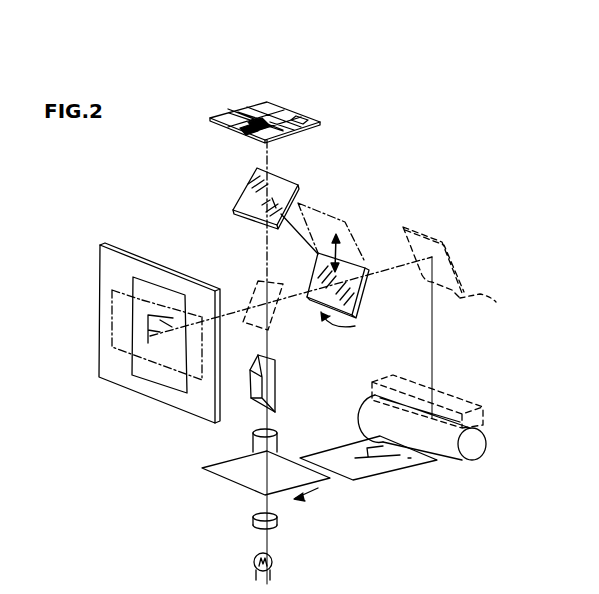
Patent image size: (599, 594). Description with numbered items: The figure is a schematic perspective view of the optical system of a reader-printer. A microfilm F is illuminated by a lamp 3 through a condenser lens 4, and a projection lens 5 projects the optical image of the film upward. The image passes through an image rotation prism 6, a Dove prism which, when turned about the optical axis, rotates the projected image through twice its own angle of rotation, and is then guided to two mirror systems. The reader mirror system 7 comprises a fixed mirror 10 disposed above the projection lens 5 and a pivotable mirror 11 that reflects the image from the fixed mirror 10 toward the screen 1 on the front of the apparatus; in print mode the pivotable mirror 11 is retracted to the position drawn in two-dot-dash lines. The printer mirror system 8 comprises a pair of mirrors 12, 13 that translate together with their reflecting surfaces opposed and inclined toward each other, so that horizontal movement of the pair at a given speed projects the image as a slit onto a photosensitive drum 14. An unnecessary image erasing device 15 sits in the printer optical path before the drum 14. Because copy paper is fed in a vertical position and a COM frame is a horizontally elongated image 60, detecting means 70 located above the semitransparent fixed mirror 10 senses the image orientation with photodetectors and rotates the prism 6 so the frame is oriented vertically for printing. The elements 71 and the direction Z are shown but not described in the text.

The screen 1 is at (107, 372).
The lamp 3 is at (273, 556).
The condenser lens 4 is at (278, 520).
The projection lens 5 is at (253, 438).
The image rotation prism 6 is at (277, 385).
The reader mirror system 7 is at (308, 195).
The printer mirror system 8 is at (460, 250).
The fixed mirror 10 is at (243, 197).
The pivotable mirror 11 is at (348, 300).
The mirror 12 is at (280, 317).
The mirror 13 is at (490, 309).
The photosensitive drum 14 is at (453, 448).
The unnecessary image erasing device 15 is at (443, 392).
The horizontally elongated image 60 is at (112, 292).
The detecting means 70 is at (243, 86).
The plate pattern element 71 is at (300, 113).
The microfilm F is at (238, 478).
The direction Z is at (306, 504).